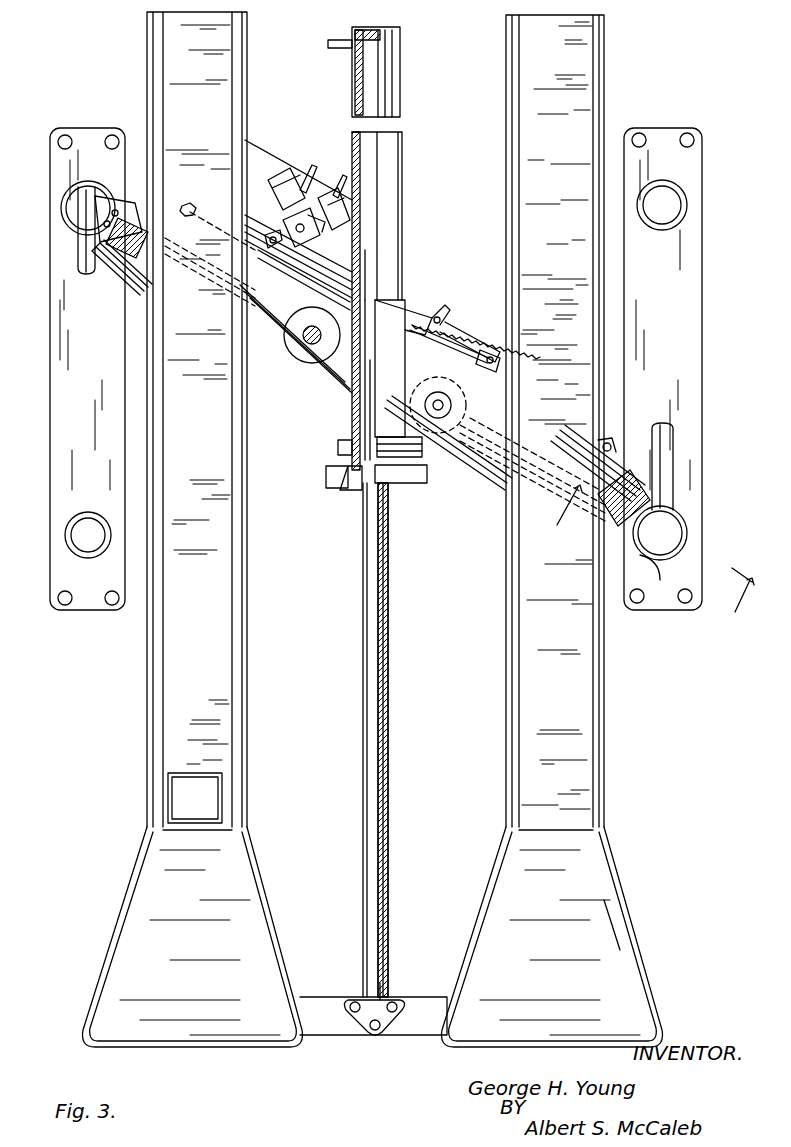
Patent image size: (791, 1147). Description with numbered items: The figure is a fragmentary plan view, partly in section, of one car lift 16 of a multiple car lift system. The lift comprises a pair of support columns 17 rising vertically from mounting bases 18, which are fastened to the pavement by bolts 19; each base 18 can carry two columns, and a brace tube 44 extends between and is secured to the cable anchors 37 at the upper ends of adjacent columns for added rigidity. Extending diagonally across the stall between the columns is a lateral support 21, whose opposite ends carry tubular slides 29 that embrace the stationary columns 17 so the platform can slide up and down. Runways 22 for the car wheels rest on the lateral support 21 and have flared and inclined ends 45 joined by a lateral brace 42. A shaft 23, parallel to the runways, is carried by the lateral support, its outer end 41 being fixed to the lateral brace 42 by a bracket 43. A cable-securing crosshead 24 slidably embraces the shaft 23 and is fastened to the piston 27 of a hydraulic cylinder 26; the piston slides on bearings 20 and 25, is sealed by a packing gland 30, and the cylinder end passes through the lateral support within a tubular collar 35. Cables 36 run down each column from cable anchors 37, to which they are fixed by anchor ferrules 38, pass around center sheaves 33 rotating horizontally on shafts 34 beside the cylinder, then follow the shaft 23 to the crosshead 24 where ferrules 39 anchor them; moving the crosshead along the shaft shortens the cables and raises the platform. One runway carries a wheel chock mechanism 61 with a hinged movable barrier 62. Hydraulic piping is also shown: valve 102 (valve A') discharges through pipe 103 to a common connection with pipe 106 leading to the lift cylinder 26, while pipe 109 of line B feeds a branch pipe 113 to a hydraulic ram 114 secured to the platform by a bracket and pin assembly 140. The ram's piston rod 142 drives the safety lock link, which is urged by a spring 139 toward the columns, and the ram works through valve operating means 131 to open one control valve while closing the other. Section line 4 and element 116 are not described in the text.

The section line 4 is at (647, 563).
The car lift 16 is at (652, 960).
The support column 17 is at (70, 540).
The mounting base 18 is at (60, 378).
The bolt 19 is at (112, 606).
The bearing 20 is at (352, 72).
The lateral support 21 is at (310, 382).
The runway 22 is at (233, 668).
The shaft 23 is at (362, 796).
The cable-securing crosshead 24 is at (400, 483).
The bearing 25 is at (352, 428).
The hydraulic cylinder 26 is at (355, 140).
The piston 27 is at (352, 490).
The tubular slide 29 is at (61, 203).
The packing gland 30 is at (338, 460).
The center sheave 33 is at (300, 345).
The shaft 34 is at (310, 333).
The tubular collar 35 is at (352, 262).
The cable 36 is at (140, 190).
The cable anchor 37 is at (645, 560).
The anchor ferrule 38 is at (100, 215).
The ferrule 39 is at (335, 488).
The outer end 41 is at (388, 1000).
The lateral brace 42 is at (308, 997).
The bracket 43 is at (365, 1028).
The brace tube 44 is at (78, 258).
The flared and inclined end 45 is at (135, 977).
The wheel chock mechanism 61 is at (232, 782).
The movable barrier 62 is at (172, 793).
The valve 102 is at (328, 222).
The pipe 103 is at (338, 195).
The pipe 106 is at (272, 182).
The pipe 109 is at (304, 185).
The branch pipe 113 is at (448, 308).
The hydraulic ram 114 is at (460, 330).
The pin 116 is at (180, 194).
The valve operating means 131 is at (350, 250).
The spring 139 is at (436, 392).
The bracket and pin assembly 140 is at (432, 318).
The piston rod 142 is at (475, 350).